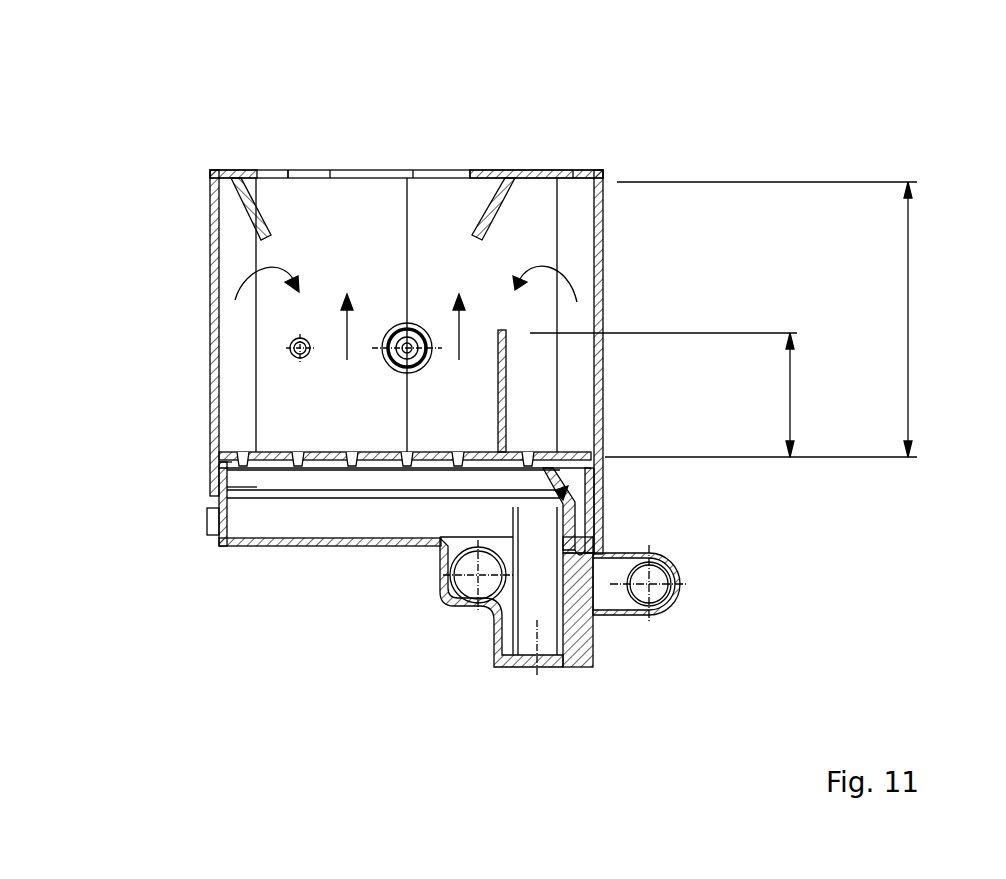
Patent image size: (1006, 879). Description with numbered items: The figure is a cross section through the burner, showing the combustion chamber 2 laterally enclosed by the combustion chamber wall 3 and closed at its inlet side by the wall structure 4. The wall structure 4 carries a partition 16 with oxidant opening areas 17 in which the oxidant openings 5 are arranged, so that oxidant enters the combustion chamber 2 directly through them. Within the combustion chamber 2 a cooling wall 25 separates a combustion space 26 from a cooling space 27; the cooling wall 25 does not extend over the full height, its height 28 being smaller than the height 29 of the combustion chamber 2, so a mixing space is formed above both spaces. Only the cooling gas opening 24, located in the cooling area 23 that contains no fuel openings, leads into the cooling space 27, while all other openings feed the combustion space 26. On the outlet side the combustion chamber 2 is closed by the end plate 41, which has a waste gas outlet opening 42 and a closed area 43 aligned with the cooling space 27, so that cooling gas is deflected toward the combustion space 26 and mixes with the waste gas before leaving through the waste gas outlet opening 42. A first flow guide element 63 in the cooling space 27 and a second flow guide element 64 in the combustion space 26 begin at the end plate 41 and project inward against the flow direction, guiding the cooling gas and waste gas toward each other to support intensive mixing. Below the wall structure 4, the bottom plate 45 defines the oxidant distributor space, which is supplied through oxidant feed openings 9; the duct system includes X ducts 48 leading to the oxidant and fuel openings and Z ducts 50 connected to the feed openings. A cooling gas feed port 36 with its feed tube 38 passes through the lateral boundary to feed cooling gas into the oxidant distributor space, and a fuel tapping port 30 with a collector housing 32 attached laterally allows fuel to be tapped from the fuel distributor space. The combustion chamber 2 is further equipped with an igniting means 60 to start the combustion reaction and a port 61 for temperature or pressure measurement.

The combustion chamber 2 is at (612, 320).
The combustion chamber wall 3 is at (603, 277).
The wall structure 4 is at (612, 515).
The oxidant openings 5 is at (288, 452).
The oxidant feed openings 9 is at (517, 668).
The partition 16 is at (603, 490).
The oxidant opening areas 17 is at (228, 456).
The cooling area 23 is at (603, 396).
The cooling gas opening 24 is at (527, 450).
The cooling wall 25 is at (498, 345).
The combustion space 26 is at (330, 400).
The cooling space 27 is at (581, 368).
The height of the cooling wall 28 is at (792, 396).
The height of the combustion chamber 29 is at (910, 320).
The fuel tapping port 30 is at (695, 593).
The collector housing 32 is at (677, 568).
The cooling gas feed port 36 is at (447, 600).
The feed tube 38 is at (463, 612).
The end plate 41 is at (540, 158).
The waste gas outlet opening 42 is at (265, 172).
The closed area 43 is at (573, 172).
The bottom plate 45 is at (306, 548).
The X ducts 48 is at (218, 500).
The Z ducts 50 is at (542, 630).
The igniting means 60 is at (385, 325).
The port 61 is at (312, 335).
The first flow guide element 63 is at (468, 172).
The second flow guide element 64 is at (292, 172).